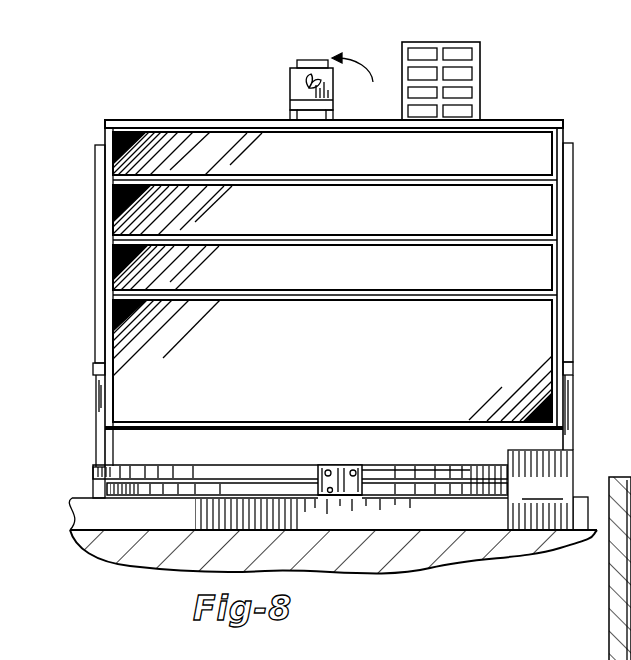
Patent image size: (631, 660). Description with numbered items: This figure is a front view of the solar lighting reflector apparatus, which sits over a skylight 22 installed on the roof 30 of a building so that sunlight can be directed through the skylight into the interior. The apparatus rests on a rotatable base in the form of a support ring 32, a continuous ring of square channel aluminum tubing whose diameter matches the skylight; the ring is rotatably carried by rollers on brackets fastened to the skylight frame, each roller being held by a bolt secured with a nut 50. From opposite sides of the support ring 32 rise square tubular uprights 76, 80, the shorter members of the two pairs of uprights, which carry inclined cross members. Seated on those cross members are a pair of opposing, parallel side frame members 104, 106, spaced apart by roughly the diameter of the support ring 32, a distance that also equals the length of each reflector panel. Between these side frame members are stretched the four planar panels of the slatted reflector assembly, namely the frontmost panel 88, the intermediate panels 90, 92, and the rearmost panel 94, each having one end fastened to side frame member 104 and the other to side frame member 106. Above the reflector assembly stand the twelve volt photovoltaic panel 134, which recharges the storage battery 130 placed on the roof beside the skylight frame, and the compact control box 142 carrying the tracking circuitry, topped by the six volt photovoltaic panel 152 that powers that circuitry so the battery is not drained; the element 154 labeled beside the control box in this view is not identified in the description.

The skylight 22 is at (580, 494).
The roof 30 is at (372, 552).
The support ring 32 is at (282, 444).
The nut 50 is at (602, 473).
The square tubular upright 76 is at (100, 440).
The square tubular upright 80 is at (565, 435).
The frontmost reflector panel 88 is at (542, 332).
The intermediate reflector panel 90 is at (542, 273).
The intermediate reflector panel 92 is at (542, 205).
The rearmost reflector panel 94 is at (535, 150).
The side frame member 104 is at (99, 297).
The side frame member 106 is at (601, 209).
The storage battery 130 is at (540, 490).
The photovoltaic panel 134 is at (495, 60).
The control box 142 is at (355, 79).
The photovoltaic panel 152 is at (315, 60).
The plant sensor unit 154 is at (300, 80).